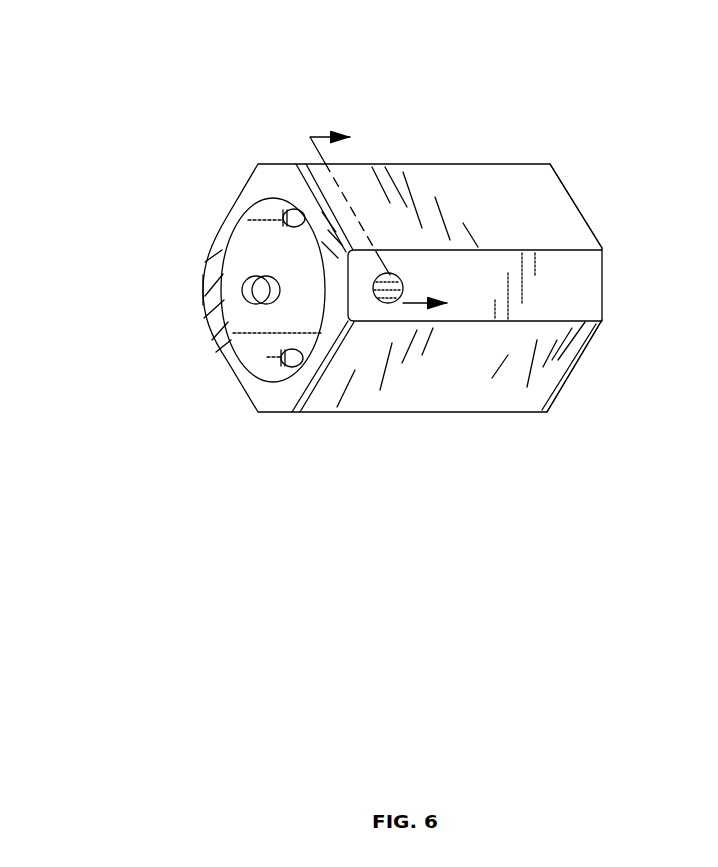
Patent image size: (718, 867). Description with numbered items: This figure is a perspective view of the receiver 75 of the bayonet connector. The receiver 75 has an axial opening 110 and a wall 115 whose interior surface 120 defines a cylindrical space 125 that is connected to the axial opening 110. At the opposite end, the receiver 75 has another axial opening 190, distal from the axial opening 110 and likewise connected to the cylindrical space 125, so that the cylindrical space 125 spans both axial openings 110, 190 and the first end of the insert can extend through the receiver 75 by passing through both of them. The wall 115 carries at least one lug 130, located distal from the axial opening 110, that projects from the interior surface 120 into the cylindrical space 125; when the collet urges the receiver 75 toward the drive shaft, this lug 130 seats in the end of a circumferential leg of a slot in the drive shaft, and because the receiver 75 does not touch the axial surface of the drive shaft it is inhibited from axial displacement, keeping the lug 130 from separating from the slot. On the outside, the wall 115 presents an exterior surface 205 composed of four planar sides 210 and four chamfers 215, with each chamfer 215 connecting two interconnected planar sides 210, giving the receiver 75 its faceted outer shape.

The receiver 75 is at (307, 443).
The axial opening 110 is at (622, 262).
The wall 115 is at (367, 163).
The interior surface 120 is at (262, 323).
The cylindrical space 125 is at (260, 242).
The lug 130 is at (283, 211).
The axial opening 190 is at (226, 301).
The exterior surface 205 is at (478, 163).
The planar side 210 is at (515, 358).
The chamfer 215 is at (465, 311).